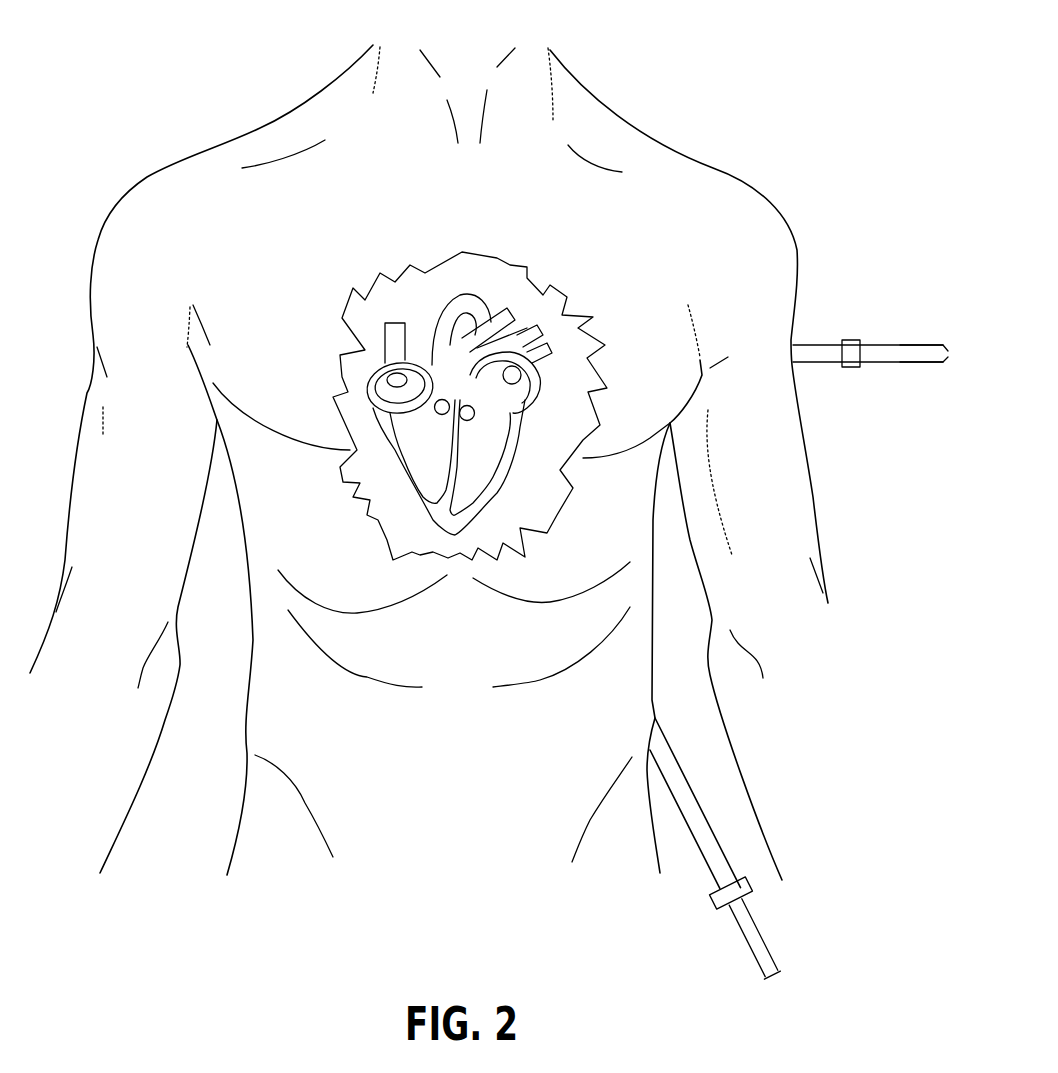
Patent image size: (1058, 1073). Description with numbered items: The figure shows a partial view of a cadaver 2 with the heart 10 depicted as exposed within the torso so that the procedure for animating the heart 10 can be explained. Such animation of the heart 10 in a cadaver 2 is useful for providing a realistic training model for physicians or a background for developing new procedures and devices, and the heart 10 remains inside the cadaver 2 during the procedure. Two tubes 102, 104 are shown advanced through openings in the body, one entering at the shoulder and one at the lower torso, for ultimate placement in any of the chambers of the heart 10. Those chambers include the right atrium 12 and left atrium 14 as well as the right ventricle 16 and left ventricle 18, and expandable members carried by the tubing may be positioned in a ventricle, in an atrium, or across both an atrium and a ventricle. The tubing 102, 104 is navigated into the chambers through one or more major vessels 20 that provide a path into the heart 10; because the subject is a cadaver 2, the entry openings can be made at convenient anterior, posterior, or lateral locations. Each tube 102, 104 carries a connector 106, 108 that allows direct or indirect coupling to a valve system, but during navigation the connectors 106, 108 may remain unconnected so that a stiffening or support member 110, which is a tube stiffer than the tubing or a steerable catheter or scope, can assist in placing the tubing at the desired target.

The cadaver 2 is at (632, 108).
The heart 10 is at (432, 543).
The right atrium 12 is at (370, 380).
The left atrium 14 is at (505, 392).
The right ventricle 16 is at (420, 455).
The left ventricle 18 is at (488, 443).
The major vessel 20 is at (463, 300).
The tube 102 is at (820, 347).
The tube 104 is at (698, 843).
The connector 106 is at (848, 367).
The connector 108 is at (750, 890).
The support member 110 is at (917, 357).